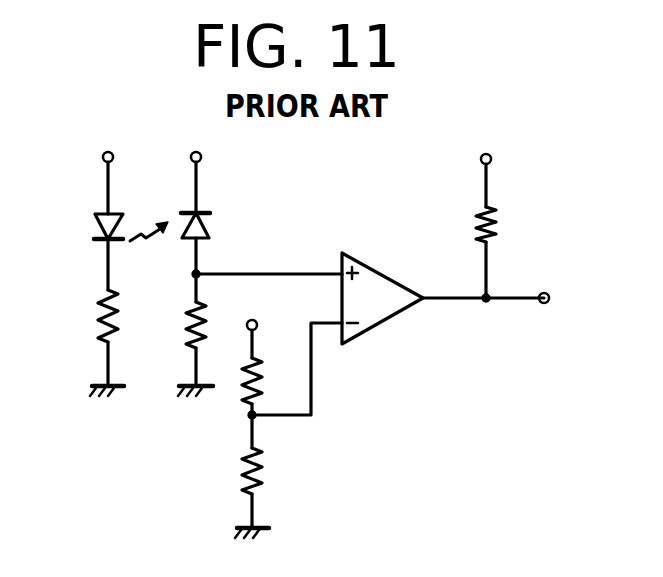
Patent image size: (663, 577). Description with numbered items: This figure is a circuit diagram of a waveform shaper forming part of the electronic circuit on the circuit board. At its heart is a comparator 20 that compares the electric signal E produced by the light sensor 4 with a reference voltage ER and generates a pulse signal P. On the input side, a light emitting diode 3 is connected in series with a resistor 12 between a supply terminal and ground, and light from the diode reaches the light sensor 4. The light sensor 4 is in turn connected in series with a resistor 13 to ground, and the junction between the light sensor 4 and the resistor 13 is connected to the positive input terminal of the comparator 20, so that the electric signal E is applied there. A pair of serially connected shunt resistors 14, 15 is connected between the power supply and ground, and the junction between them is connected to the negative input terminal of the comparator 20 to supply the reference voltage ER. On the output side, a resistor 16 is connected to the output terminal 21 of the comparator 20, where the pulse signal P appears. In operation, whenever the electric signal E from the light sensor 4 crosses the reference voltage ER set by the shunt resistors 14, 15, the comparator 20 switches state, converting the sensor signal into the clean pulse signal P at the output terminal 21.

The light emitting diode 3 is at (95, 230).
The light sensor 4 is at (206, 221).
The resistor 12 is at (104, 315).
The resistor 13 is at (203, 312).
The shunt resistor 14 is at (261, 367).
The shunt resistor 15 is at (262, 462).
The resistor 16 is at (492, 214).
The comparator 20 is at (393, 318).
The output terminal 21 is at (549, 297).
The electric signal E is at (296, 270).
The reference voltage ER is at (313, 400).
The pulse signal P is at (513, 294).